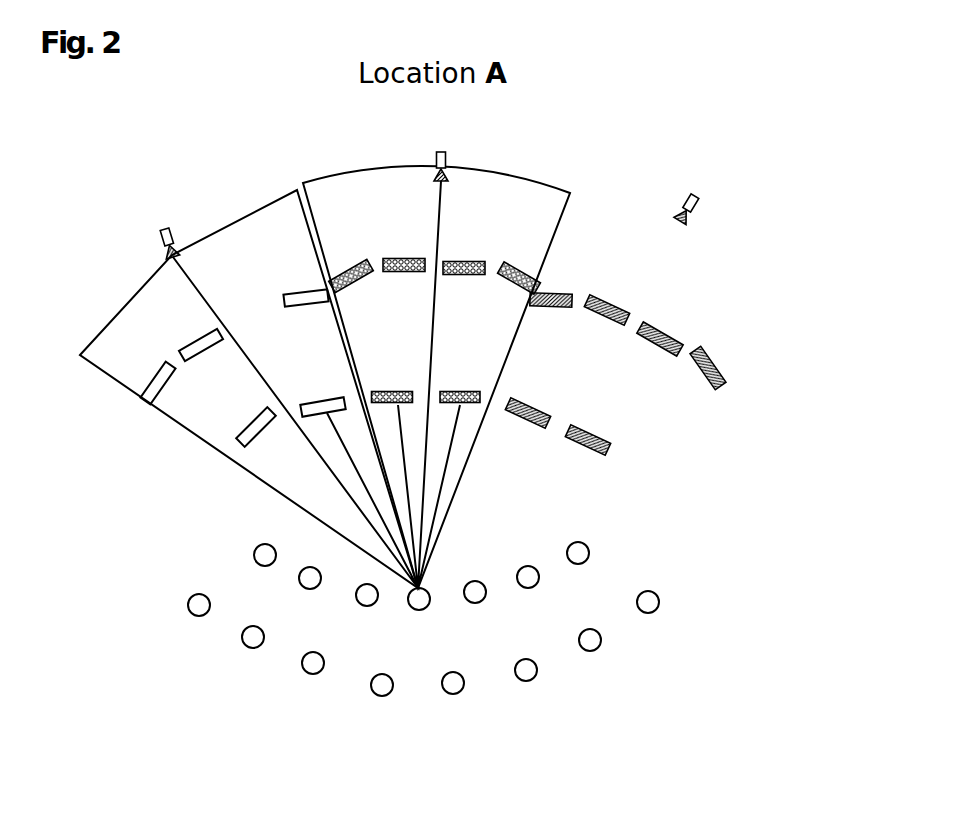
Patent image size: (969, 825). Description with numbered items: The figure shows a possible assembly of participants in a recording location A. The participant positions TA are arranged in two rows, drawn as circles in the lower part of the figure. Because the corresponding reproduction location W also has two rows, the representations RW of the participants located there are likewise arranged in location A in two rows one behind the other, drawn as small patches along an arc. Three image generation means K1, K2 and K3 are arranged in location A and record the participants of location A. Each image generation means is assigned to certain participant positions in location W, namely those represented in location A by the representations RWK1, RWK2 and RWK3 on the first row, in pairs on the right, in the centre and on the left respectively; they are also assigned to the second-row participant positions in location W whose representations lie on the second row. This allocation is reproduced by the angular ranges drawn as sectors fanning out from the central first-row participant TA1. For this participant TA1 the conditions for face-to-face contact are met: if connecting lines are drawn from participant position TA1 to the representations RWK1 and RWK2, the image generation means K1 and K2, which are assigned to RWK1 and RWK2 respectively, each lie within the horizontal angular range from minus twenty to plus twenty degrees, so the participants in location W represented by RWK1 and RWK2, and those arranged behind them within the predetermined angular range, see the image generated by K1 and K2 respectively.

The image generation means K1 is at (167, 225).
The image generation means K2 is at (444, 150).
The image generation means K3 is at (698, 193).
The representation RWK1 is at (258, 392).
The representation RWK2 is at (455, 388).
The representation RWK3 is at (597, 430).
The representations RW is at (717, 363).
The participant position TA1 is at (417, 618).
The participant positions TA is at (538, 585).